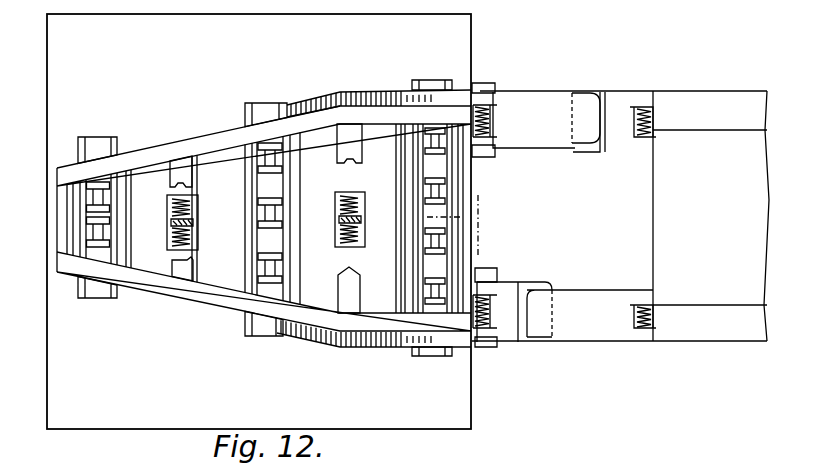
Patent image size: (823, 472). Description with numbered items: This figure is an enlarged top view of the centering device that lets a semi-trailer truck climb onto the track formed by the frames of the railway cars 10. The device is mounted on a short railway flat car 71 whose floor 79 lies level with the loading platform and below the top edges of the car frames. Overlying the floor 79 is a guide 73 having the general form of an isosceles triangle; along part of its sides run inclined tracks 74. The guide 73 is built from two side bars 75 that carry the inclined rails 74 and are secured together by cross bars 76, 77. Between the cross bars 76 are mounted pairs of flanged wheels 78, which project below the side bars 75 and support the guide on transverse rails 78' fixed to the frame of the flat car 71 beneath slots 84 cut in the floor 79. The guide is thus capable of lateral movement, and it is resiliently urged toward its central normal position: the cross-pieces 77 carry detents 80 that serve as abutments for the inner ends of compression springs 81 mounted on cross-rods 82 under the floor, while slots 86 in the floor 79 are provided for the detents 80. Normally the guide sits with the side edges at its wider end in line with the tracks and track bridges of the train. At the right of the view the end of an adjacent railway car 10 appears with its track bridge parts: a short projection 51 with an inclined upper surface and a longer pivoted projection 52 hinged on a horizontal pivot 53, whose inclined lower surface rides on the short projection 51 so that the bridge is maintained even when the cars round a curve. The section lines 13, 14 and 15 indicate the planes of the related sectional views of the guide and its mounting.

The railway car 10 is at (727, 217).
The section line 13 is at (32, 262).
The section line 14 is at (112, 107).
The section line 15 / wall 15 is at (730, 103).
The short projection 51 is at (623, 140).
The longer pivoted projection 52 is at (552, 134).
The horizontal pivot 53 is at (657, 112).
The railway flat car 71 is at (437, 429).
The guide 73 is at (223, 305).
The inclined tracks 74 is at (327, 78).
The side bars 75 is at (217, 138).
The cross bars 76 is at (64, 194).
The cross-pieces 77 is at (462, 198).
The flanged wheels 78 is at (301, 218).
The transverse rails 78' is at (121, 134).
The floor 79 is at (192, 409).
The detents 80 is at (172, 231).
The compression springs 81 is at (196, 248).
The cross-rods 82 is at (195, 212).
The slots 84 is at (113, 294).
The slots 86 is at (196, 197).